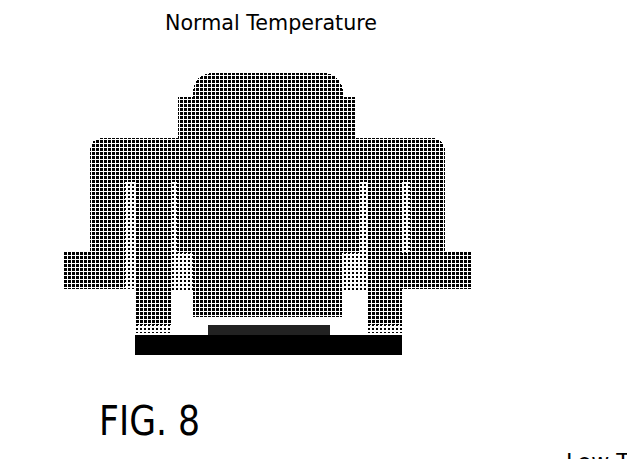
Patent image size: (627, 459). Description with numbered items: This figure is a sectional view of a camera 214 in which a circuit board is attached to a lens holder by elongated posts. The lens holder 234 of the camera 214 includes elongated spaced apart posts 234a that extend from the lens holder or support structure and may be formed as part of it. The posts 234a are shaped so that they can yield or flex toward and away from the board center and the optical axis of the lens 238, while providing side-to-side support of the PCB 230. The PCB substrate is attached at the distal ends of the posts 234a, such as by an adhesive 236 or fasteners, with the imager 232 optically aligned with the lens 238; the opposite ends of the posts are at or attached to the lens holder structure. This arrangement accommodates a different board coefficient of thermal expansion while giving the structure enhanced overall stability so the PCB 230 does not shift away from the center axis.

The camera 214 is at (315, 184).
The lens 238 is at (303, 150).
The lens holder 234 is at (433, 243).
The elongated spaced apart posts 234a is at (402, 303).
The adhesive 236 is at (402, 335).
The PCB 230 is at (322, 355).
The imager 232 is at (260, 355).